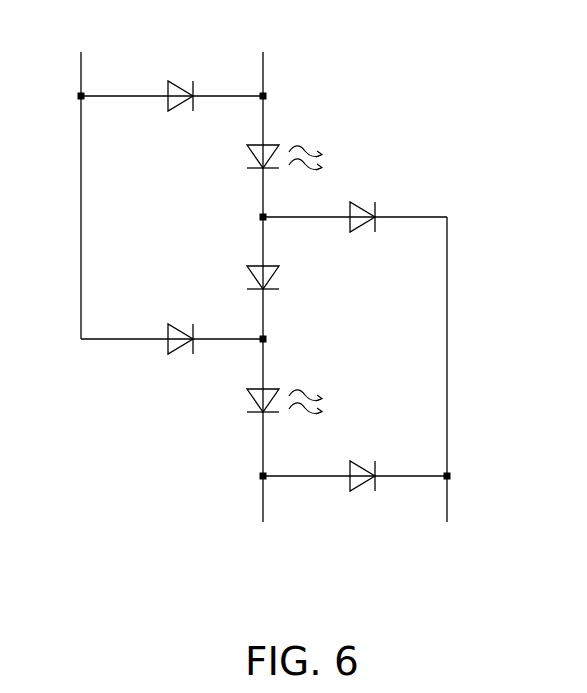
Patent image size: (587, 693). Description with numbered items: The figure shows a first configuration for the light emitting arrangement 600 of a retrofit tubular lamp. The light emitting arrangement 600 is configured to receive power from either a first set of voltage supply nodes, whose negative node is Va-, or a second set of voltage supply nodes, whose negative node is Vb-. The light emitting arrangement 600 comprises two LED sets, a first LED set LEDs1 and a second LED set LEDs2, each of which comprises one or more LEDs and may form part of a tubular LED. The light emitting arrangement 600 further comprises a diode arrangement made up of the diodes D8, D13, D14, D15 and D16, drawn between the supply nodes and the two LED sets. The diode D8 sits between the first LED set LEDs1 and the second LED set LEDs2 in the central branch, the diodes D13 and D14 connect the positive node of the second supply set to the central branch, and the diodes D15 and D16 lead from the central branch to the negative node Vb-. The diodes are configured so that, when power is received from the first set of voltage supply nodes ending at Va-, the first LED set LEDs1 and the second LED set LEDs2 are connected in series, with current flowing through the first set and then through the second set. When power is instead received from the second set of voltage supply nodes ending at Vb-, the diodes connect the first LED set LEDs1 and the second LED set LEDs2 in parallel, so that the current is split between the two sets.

The light emitting arrangement 600 is at (264, 324).
The diode D13 is at (180, 84).
The diode D14 is at (180, 326).
The diode D15 is at (362, 205).
The diode D16 is at (363, 464).
The diode D8 is at (275, 262).
The first LED set LEDs1 is at (294, 143).
The second LED set LEDs2 is at (294, 386).
The voltage supply node Va- is at (263, 543).
The voltage supply node Vb- is at (447, 542).